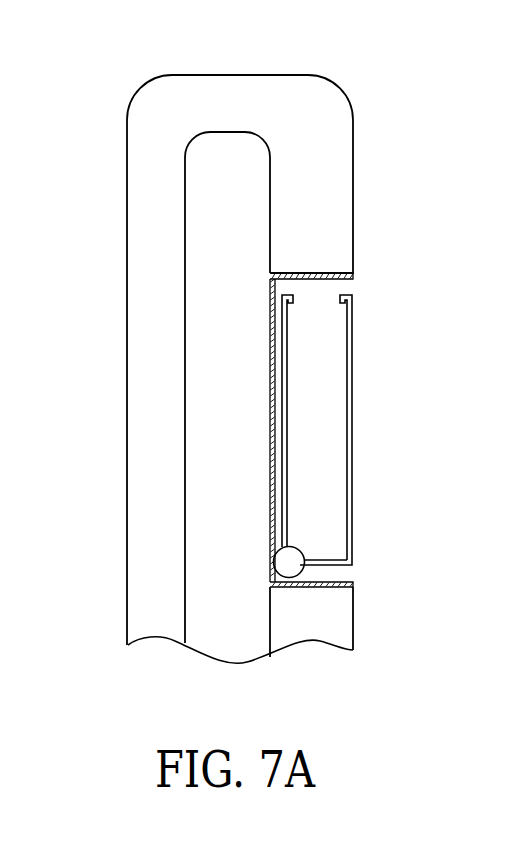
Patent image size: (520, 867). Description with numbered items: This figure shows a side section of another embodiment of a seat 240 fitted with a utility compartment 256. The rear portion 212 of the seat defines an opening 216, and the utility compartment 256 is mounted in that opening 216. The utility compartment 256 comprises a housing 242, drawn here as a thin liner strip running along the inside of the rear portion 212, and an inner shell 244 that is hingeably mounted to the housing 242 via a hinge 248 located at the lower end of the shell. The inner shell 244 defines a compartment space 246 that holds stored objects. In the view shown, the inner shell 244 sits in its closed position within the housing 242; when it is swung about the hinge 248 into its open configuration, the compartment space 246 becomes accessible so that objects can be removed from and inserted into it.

The seat 240 is at (407, 121).
The rear portion 212 is at (357, 200).
The housing 242 is at (269, 418).
The utility compartment 256 is at (379, 440).
The inner shell 244 is at (336, 567).
The compartment space 246 is at (339, 422).
The hinge 248 is at (292, 558).
The opening 216 is at (313, 601).